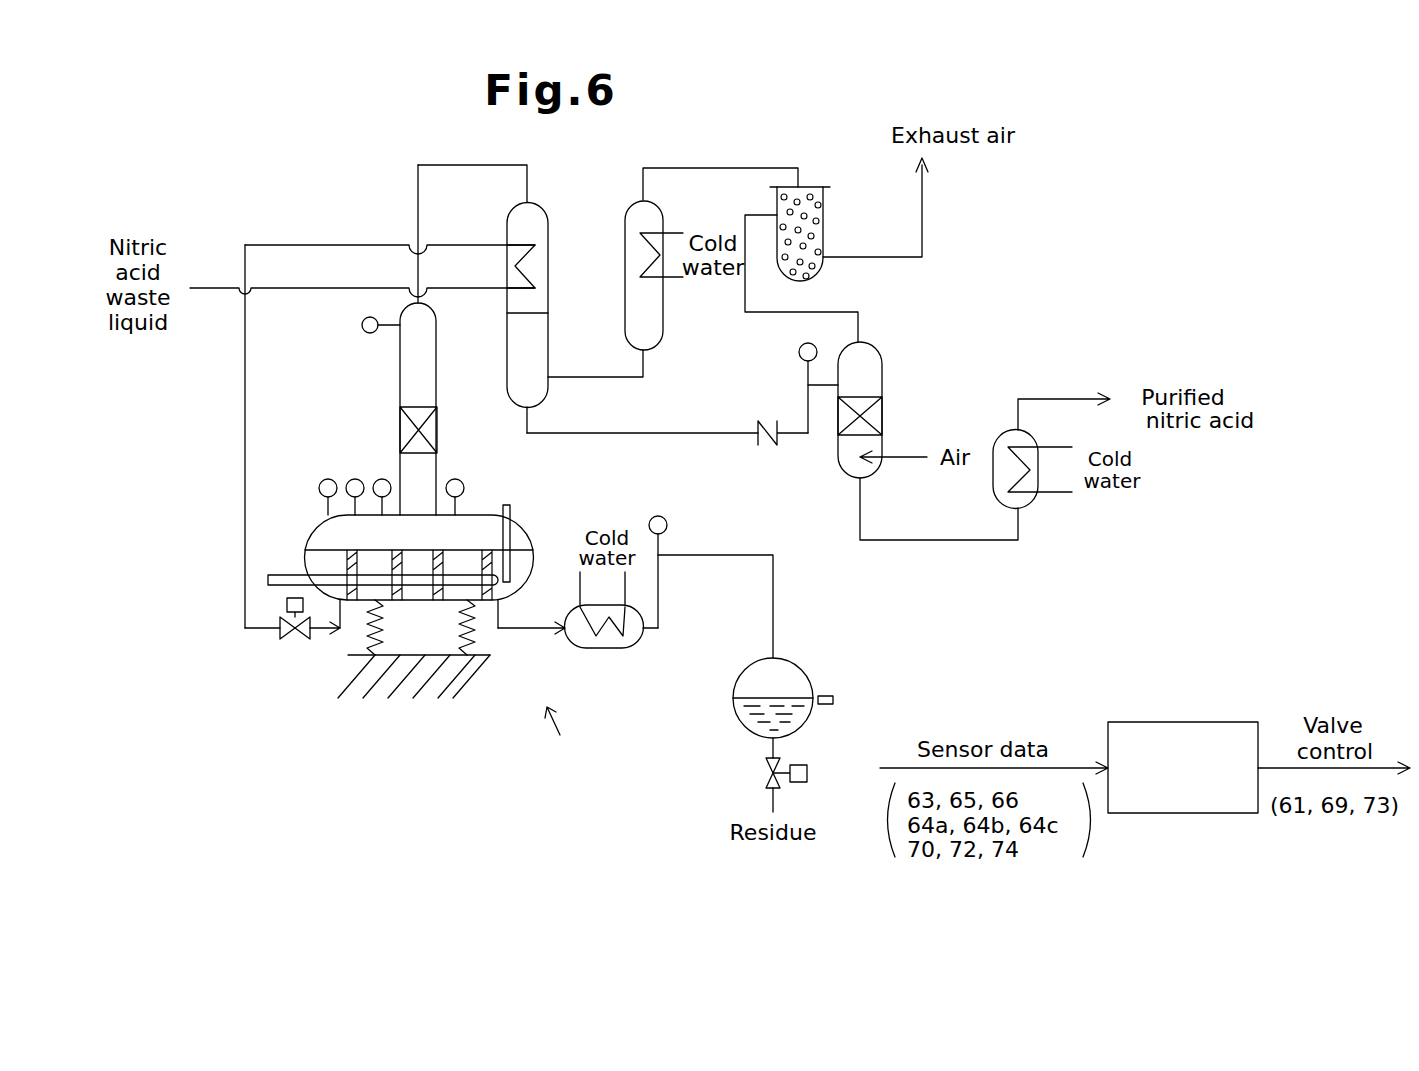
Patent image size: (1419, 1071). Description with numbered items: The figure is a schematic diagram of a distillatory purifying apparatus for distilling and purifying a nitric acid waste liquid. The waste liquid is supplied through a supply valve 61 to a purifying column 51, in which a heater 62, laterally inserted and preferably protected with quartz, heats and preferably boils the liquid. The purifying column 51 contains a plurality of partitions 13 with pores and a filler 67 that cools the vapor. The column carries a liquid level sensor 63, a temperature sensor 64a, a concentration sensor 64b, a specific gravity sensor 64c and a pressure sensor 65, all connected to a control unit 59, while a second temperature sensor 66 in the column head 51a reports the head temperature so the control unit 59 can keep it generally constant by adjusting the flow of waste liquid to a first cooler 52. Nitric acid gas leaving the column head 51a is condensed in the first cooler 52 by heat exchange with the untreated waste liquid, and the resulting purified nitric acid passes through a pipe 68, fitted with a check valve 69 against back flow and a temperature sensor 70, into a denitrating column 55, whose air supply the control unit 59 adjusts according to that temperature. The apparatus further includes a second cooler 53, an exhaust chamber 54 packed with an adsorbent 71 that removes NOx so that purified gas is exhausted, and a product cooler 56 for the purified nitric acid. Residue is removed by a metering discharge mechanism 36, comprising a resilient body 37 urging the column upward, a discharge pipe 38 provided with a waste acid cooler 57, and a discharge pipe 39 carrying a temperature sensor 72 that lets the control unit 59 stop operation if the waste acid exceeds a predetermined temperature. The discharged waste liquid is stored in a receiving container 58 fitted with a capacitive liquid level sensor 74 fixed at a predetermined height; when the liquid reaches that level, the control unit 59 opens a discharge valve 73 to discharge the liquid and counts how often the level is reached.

The partitions 13 is at (482, 558).
The metering discharge mechanism 36 is at (560, 734).
The resilient body 37 is at (386, 630).
The discharge pipe 38 is at (522, 632).
The discharge pipe 39 is at (730, 553).
The purifying column 51 is at (318, 532).
The column head 51a is at (437, 340).
The first cooler 52 is at (550, 232).
The second cooler 53 is at (624, 274).
The exhaust chamber 54 is at (806, 185).
The denitrating column 55 is at (884, 365).
The product cooler 56 is at (1006, 434).
The waste acid cooler 57 is at (606, 650).
The receiving container 58 is at (788, 662).
The control unit 59 is at (1238, 721).
The supply valve 61 is at (284, 640).
The heater 62 is at (296, 576).
The liquid level sensor 63 is at (512, 515).
The temperature sensor 64a is at (312, 484).
The concentration sensor 64b is at (350, 478).
The specific gravity sensor 64c is at (380, 478).
The pressure sensor 65 is at (465, 478).
The second temperature sensor 66 is at (362, 325).
The filler 67 is at (440, 432).
The pipe 68 is at (692, 428).
The check valve 69 is at (766, 420).
The temperature sensor 70 is at (798, 352).
The adsorbent 71 is at (816, 203).
The temperature sensor 72 is at (656, 516).
The discharge valve 73 is at (810, 772).
The liquid level sensor 74 is at (830, 694).